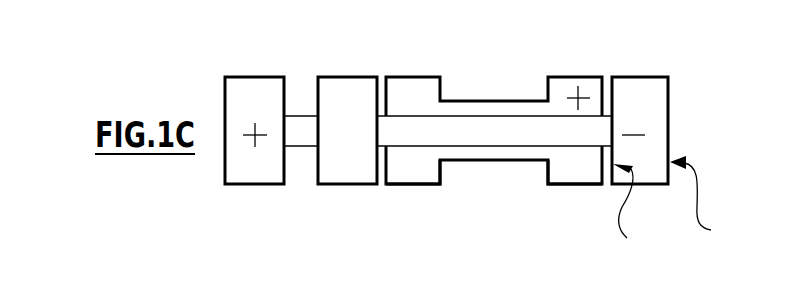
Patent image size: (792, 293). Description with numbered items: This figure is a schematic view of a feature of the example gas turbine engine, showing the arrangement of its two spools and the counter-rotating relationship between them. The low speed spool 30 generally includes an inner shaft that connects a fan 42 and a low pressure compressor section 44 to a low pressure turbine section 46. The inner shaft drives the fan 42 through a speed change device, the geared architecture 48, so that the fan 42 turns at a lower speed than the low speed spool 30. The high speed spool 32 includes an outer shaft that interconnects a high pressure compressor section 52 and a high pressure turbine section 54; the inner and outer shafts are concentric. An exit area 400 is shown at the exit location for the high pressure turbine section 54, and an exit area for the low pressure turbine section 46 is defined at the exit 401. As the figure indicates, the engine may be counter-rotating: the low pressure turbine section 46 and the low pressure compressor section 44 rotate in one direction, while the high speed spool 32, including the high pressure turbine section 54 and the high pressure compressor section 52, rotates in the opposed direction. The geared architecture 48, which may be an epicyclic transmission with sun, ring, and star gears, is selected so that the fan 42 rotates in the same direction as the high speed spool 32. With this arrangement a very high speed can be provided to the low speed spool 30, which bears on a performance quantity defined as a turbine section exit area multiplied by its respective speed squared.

The low speed spool 30 is at (413, 128).
The high speed spool 32 is at (478, 110).
The fan 42 is at (257, 88).
The low pressure compressor section 44 is at (348, 93).
The low pressure turbine section 46 is at (640, 93).
The geared architecture 48 is at (307, 127).
The high pressure compressor section 52 is at (417, 170).
The high pressure turbine section 54 is at (582, 172).
The exit area 400 is at (640, 209).
The exit 401 is at (709, 199).